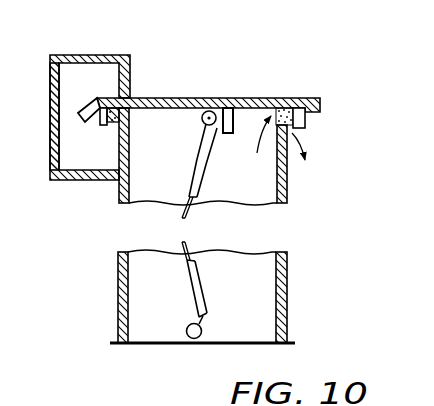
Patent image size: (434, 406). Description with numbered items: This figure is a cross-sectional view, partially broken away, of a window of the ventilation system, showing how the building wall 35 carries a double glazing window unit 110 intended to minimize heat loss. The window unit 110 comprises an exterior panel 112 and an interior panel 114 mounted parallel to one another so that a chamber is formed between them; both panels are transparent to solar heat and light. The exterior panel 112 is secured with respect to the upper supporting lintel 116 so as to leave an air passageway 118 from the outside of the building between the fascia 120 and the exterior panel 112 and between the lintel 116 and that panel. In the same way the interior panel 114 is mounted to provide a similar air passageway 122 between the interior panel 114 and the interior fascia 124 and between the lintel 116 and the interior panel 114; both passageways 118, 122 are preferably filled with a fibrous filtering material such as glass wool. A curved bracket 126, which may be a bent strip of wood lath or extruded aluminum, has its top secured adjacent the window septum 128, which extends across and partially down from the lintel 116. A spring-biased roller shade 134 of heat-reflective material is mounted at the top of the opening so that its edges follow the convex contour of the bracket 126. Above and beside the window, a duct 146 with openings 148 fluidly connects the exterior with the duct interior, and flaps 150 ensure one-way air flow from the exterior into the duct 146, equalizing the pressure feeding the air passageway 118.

The wall 35 is at (111, 283).
The double glazing window unit 110 is at (290, 285).
The exterior panel 112 is at (153, 233).
The interior panel 114 is at (285, 326).
The upper supporting lintel 116 is at (176, 98).
The air passageway 118 is at (147, 141).
The fascia 120 is at (105, 129).
The air passageway 122 is at (288, 106).
The interior fascia 124 is at (306, 122).
The bracket 126 is at (200, 297).
The window septum 128 is at (238, 108).
The spring-biased roller shade 134 is at (212, 112).
The duct 146 is at (97, 55).
The openings 148 is at (50, 123).
The flaps 150 is at (108, 132).